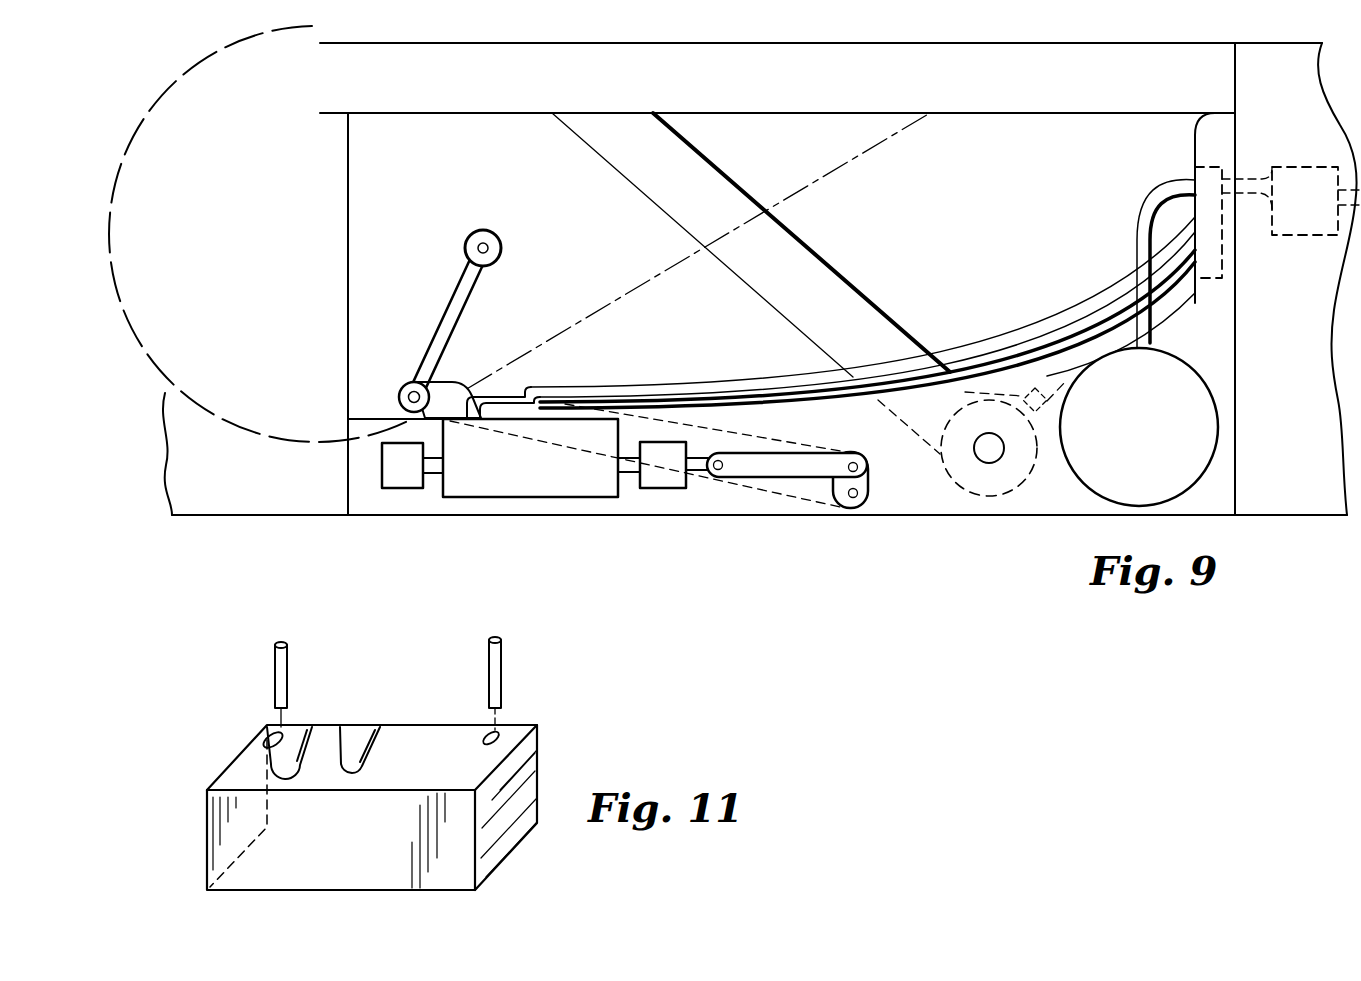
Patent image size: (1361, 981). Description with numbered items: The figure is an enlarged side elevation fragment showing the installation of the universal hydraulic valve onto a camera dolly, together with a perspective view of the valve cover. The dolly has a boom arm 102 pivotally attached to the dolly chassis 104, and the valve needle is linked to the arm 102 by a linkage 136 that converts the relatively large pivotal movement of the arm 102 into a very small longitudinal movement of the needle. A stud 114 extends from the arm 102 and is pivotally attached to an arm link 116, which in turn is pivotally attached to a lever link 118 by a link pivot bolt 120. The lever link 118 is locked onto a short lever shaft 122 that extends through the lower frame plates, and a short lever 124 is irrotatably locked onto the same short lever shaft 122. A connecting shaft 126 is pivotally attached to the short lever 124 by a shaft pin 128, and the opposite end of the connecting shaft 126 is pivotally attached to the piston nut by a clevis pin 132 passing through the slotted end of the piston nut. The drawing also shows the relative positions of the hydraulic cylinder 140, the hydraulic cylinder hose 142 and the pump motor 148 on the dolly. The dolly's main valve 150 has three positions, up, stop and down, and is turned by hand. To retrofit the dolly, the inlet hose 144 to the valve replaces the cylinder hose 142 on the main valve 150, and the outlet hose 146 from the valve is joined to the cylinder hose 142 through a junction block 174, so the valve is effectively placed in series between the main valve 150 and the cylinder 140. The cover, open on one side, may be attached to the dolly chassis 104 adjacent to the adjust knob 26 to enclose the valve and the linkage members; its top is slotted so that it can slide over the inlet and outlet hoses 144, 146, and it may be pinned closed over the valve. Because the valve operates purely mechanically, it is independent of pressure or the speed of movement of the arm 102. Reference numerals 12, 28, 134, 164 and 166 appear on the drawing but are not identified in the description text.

In FIG. 9, the drive motor 12 is at (514, 487).
In FIG. 9, the adjust knob 26 is at (398, 490).
In FIG. 9, the coupling 28 is at (658, 490).
In FIG. 9, the arm 102 is at (858, 164).
In FIG. 9, the dolly chassis 104 is at (1055, 114).
In FIG. 9, the stud 114 is at (470, 243).
In FIG. 9, the arm link 116 is at (458, 303).
In FIG. 9, the lever link 118 is at (442, 387).
In FIG. 9, the link pivot bolt 120 is at (401, 393).
In FIG. 9, the short lever shaft 122 is at (855, 498).
In FIG. 9, the short lever 124 is at (870, 483).
In FIG. 9, the connecting shaft 126 is at (808, 470).
In FIG. 9, the shaft pin 128 is at (876, 432).
In FIG. 9, the clevis pin 132 is at (715, 480).
In FIG. 9, the link 134 is at (733, 465).
In FIG. 9, the linkage 136 is at (372, 402).
In FIG. 9, the hydraulic cylinder 140 is at (853, 284).
In FIG. 9, the hydraulic cylinder hose 142 is at (1138, 228).
In FIG. 9, the inlet hose 144 is at (507, 400).
In FIG. 9, the outlet hose 146 is at (1180, 273).
In FIG. 9, the pump motor 148 is at (1158, 448).
In FIG. 9, the main valve 150 is at (1318, 143).
In FIG. 9, the junction block 174 is at (1208, 170).
In FIG. 11, the slot 164 is at (406, 706).
In FIG. 11, the pin 166 is at (503, 680).